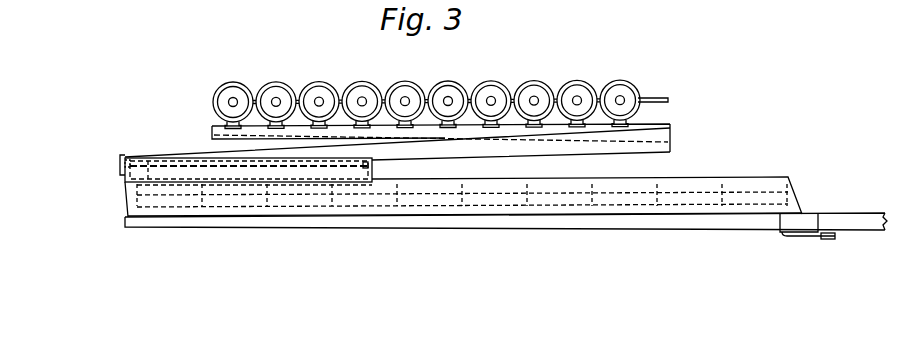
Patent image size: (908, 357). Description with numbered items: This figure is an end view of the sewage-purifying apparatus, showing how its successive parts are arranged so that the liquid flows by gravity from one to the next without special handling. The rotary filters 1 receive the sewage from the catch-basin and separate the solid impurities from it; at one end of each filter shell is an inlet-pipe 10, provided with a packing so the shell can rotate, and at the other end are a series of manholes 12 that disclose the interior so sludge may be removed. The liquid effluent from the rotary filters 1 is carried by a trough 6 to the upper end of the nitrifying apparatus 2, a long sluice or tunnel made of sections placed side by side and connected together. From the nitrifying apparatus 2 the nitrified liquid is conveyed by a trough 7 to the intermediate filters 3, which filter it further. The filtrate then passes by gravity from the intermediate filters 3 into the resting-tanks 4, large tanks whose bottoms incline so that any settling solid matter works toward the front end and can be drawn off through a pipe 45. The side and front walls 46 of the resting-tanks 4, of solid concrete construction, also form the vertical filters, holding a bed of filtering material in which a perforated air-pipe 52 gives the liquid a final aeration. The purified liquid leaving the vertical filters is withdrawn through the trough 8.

The rotary filter 1 is at (412, 78).
The manhole 12 is at (480, 78).
The inlet-pipe 10 is at (668, 93).
The trough 6 is at (215, 130).
The intermediate filter 3 is at (182, 160).
The trough 7 is at (128, 166).
The nitrifying apparatus 2 is at (504, 150).
The resting-tank 4 is at (492, 212).
The perforated air-pipe 52 is at (683, 202).
The wall 46 is at (572, 208).
The trough 8 is at (728, 222).
The pipe 45 is at (810, 253).